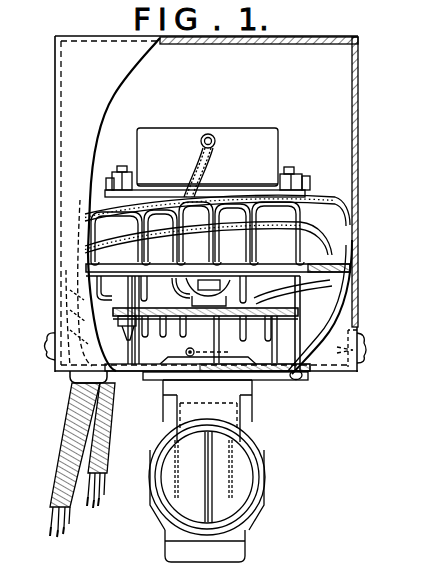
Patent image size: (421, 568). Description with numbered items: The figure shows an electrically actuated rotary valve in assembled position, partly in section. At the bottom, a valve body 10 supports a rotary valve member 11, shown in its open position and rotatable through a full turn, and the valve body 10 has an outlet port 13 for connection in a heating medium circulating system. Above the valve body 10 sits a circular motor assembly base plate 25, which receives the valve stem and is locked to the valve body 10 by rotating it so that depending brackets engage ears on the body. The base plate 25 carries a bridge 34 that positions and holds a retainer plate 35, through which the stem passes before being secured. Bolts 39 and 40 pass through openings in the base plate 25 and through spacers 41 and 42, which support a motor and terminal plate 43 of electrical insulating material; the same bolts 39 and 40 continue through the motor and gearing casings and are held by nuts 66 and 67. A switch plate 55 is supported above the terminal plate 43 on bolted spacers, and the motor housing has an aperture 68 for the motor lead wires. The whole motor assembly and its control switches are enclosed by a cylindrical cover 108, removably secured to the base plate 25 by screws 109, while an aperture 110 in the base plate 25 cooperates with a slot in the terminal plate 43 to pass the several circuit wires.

The valve body 10 is at (246, 542).
The rotary valve member 11 is at (208, 480).
The outlet port 13 is at (250, 452).
The motor assembly base plate 25 is at (150, 381).
The bridge 34 is at (236, 364).
The retainer plate 35 is at (225, 384).
The bolt 39 is at (121, 166).
The bolt 40 is at (292, 168).
The spacer 41 is at (132, 352).
The spacer 42 is at (298, 342).
The motor and terminal plate 43 is at (356, 266).
The switch plate 55 is at (186, 351).
The nut 66 is at (114, 178).
The nut 67 is at (308, 179).
The aperture 68 is at (220, 124).
The cylindrical cover 108 is at (358, 167).
The screw 109 is at (50, 360).
The aperture 110 is at (74, 381).